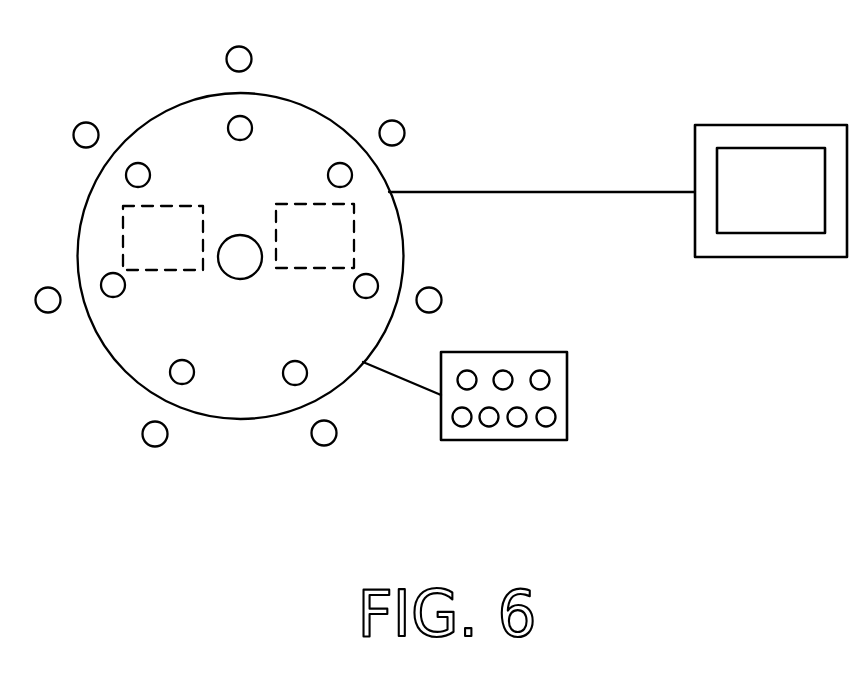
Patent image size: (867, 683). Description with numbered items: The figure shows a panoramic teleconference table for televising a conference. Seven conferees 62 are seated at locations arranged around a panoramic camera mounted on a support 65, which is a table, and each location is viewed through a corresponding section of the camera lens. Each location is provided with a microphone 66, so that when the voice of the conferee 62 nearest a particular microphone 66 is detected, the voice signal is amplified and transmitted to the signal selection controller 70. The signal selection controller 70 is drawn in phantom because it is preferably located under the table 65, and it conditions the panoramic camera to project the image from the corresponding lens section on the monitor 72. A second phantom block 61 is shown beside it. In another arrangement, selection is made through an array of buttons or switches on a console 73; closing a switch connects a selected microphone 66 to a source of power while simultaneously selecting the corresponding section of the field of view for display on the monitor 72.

The support 65 is at (180, 132).
The conferees 62 is at (252, 58).
The microphone 66 is at (170, 373).
The signal selection controller 70 is at (186, 252).
The sensor / detector 61 is at (336, 250).
The monitor 72 is at (791, 203).
The console 73 is at (567, 415).